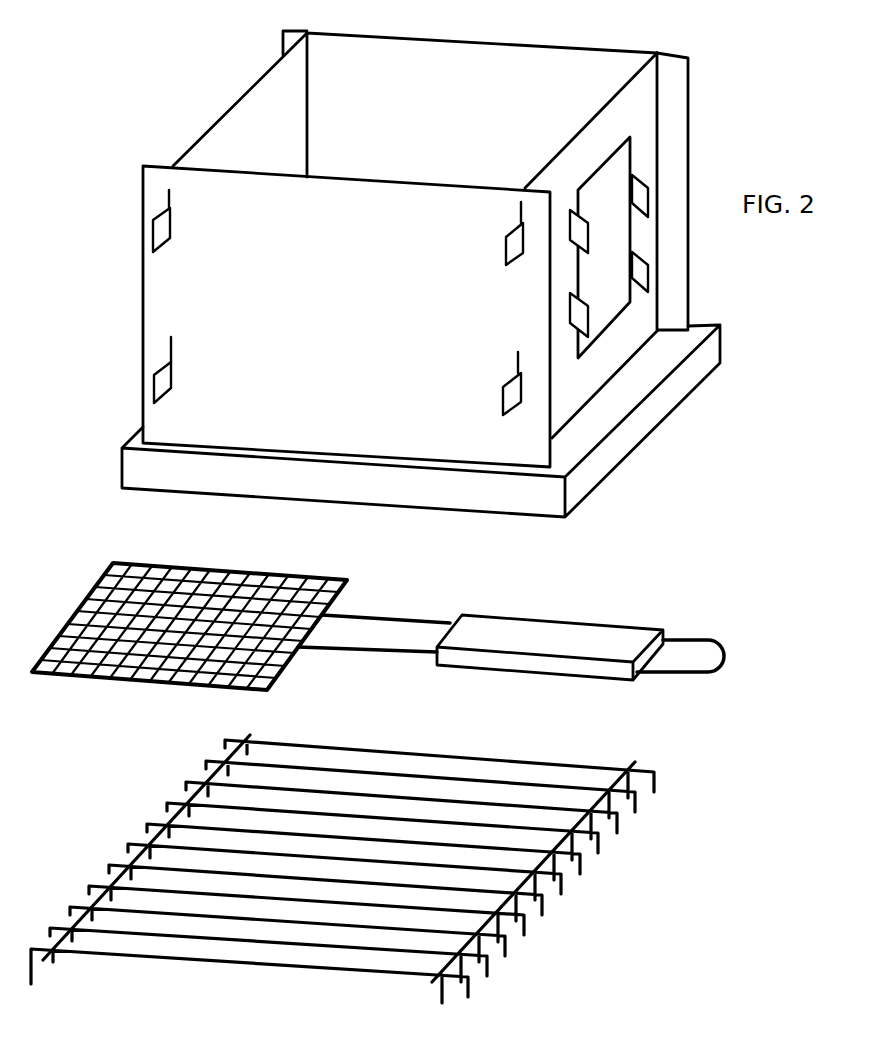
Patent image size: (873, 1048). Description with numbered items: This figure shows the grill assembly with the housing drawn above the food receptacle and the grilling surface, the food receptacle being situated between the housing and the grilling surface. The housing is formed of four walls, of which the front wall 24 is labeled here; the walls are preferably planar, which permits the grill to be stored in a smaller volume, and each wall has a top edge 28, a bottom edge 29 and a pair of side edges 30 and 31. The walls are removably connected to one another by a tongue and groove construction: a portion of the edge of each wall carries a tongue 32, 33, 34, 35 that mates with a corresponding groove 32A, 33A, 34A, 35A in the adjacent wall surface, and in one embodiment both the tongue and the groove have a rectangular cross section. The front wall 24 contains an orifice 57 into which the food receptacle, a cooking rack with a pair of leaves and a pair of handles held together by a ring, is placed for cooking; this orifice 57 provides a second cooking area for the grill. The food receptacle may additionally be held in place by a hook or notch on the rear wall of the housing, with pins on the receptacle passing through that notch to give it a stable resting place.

The front wall 24 is at (654, 191).
The top edge 28 is at (358, 182).
The bottom edge 29 is at (318, 450).
The side edge 30 is at (320, 316).
The side edge 31 is at (548, 325).
The tongue 32 is at (506, 250).
The groove 32A is at (523, 233).
The tongue 33 is at (503, 400).
The groove 33A is at (522, 392).
The tongue 34 is at (154, 384).
The groove 34A is at (172, 368).
The tongue 35 is at (153, 230).
The groove 35A is at (170, 219).
The orifice 57 is at (609, 247).